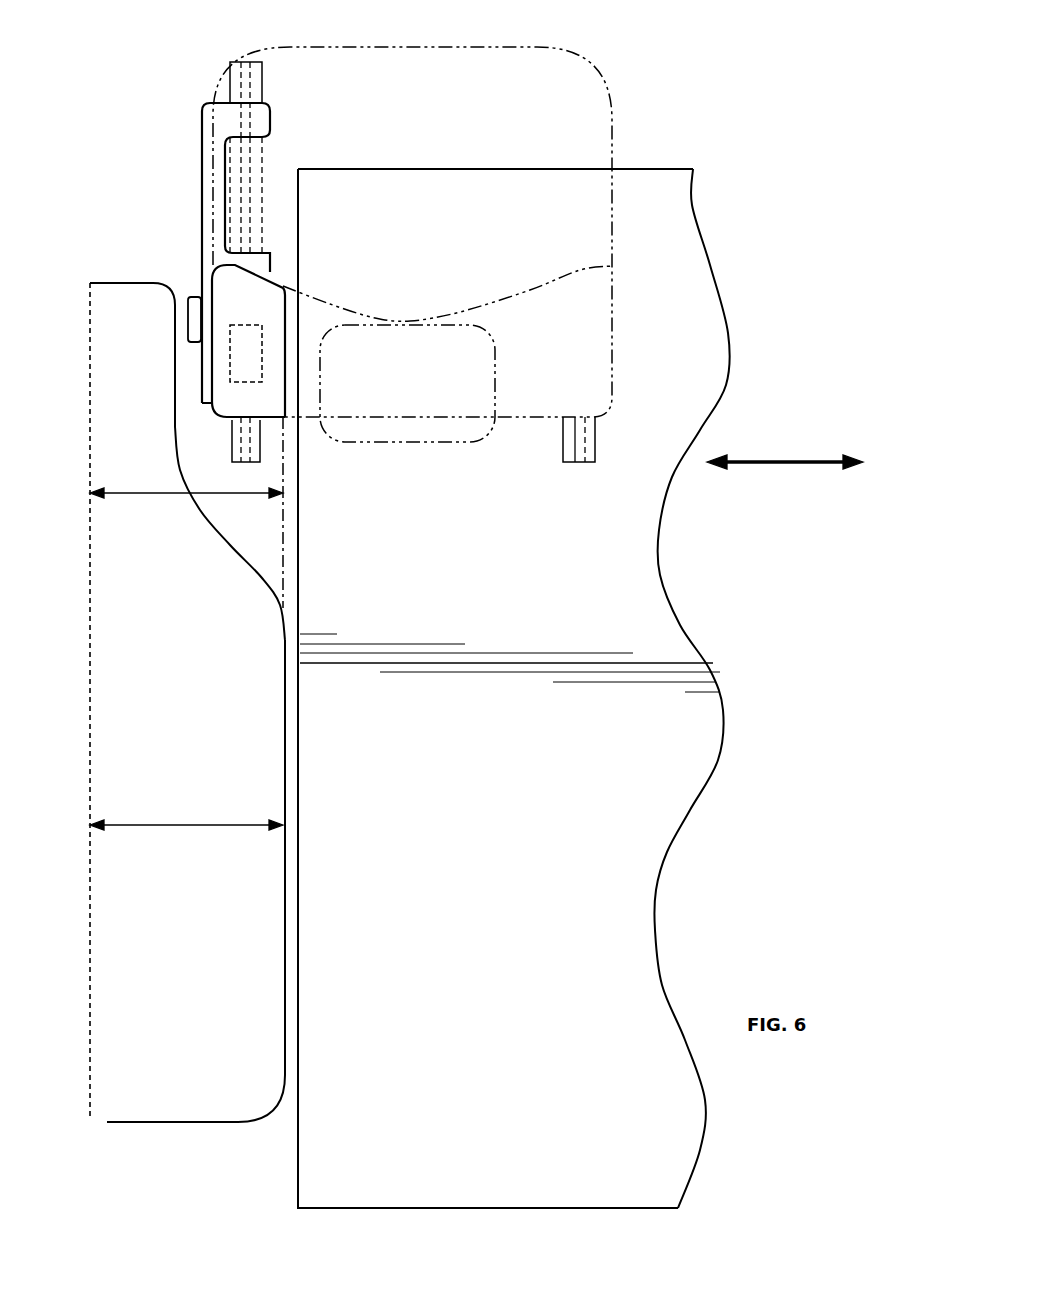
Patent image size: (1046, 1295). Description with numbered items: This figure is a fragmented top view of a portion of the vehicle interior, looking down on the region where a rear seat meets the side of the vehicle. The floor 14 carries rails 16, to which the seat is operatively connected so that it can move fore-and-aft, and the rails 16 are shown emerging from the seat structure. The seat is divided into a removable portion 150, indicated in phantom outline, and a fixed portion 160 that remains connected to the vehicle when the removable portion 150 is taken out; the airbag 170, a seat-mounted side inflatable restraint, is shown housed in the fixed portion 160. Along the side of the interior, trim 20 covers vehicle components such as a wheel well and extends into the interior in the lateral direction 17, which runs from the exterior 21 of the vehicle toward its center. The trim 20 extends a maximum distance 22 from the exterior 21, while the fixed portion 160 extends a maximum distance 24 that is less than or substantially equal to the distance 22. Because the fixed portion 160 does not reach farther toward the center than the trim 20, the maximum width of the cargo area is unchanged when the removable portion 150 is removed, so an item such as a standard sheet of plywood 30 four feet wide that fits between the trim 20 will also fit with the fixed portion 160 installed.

The floor 14 is at (273, 542).
The rails 16 is at (252, 462).
The lateral direction 17 is at (812, 460).
The trim 20 is at (285, 923).
The exterior 21 is at (89, 717).
The maximum distance 22 is at (182, 828).
The maximum distance 24 is at (182, 495).
The sheet of plywood 30 is at (604, 852).
The removable portion 150 is at (618, 197).
The fixed portion 160 is at (195, 250).
The airbag 170 is at (243, 336).